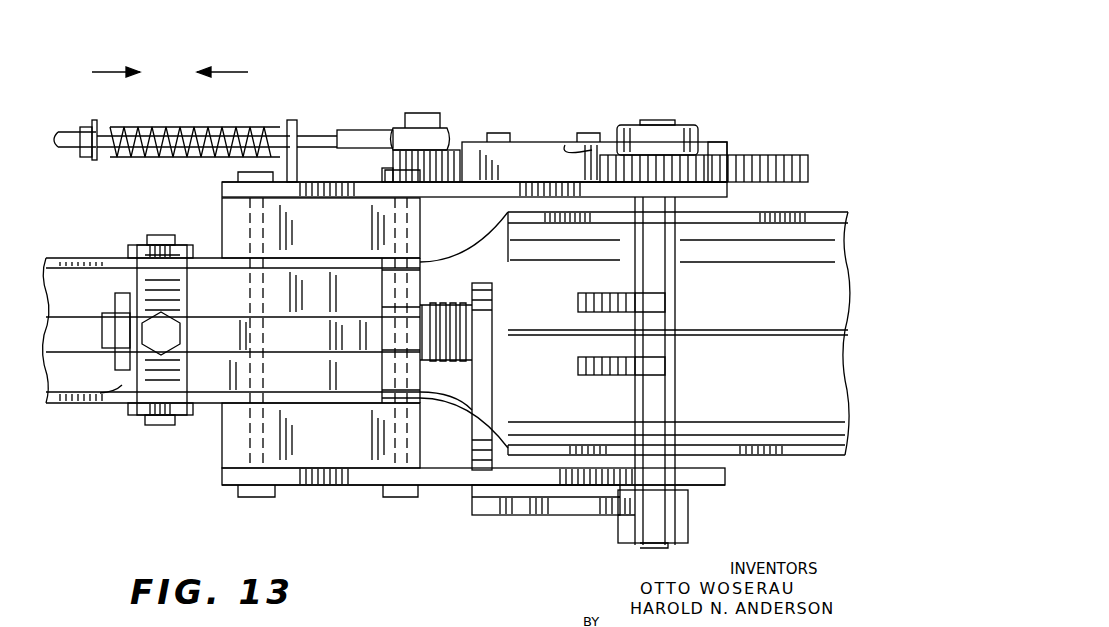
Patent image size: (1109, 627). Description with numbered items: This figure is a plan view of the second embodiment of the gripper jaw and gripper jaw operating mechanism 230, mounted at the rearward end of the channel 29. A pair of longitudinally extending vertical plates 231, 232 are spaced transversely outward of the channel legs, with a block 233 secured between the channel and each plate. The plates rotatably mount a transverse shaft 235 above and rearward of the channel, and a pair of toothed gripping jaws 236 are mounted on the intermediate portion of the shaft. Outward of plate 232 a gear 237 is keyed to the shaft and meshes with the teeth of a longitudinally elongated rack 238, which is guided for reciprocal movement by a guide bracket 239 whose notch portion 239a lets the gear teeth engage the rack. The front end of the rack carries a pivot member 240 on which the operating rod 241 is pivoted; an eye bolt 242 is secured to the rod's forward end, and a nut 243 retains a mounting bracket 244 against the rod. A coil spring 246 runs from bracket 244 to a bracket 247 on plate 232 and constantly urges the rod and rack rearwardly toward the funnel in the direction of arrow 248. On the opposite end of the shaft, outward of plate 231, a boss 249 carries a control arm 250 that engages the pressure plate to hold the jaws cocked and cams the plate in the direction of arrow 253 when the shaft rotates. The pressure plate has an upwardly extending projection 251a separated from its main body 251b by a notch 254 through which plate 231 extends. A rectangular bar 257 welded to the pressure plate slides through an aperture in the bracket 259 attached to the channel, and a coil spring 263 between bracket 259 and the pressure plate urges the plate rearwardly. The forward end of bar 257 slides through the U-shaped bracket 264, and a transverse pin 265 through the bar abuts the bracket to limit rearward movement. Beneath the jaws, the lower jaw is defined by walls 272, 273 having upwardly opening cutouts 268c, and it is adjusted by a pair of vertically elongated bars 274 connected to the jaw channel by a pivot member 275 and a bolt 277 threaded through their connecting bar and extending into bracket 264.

The channel 29 is at (82, 262).
The gripper jaw and gripper jaw operating mechanism 230 is at (216, 489).
The vertical plate 231 is at (725, 480).
The vertical plate 232 is at (508, 190).
The block 233 is at (358, 232).
The transverse shaft 235 is at (680, 282).
The toothed gripping jaws 236 is at (580, 366).
The gear 237 is at (690, 128).
The rack 238 is at (798, 156).
The guide bracket 239 is at (527, 145).
The notch portion 239a is at (575, 148).
The pivot member 240 is at (425, 122).
The operating rod 241 is at (360, 132).
The eye bolt 242 is at (63, 130).
The nut 243 is at (87, 125).
The mounting bracket 244 is at (94, 160).
The coil spring 246 is at (175, 128).
The bracket 247 is at (295, 122).
The arrow 248 is at (103, 70).
The boss 249 is at (688, 518).
The control arm 250 is at (600, 510).
The projection 251a is at (470, 512).
The main body 251b is at (490, 395).
The arrow 253 is at (242, 70).
The notch 254 is at (470, 453).
The rectangular bar 257 is at (282, 340).
The bracket 259 is at (385, 296).
The coil spring 263 is at (445, 305).
The U-shaped bracket 264 is at (122, 390).
The transverse pin 265 is at (118, 301).
The cutouts 268c is at (470, 236).
The wall 272 is at (820, 387).
The wall 273 is at (812, 297).
The vertically elongated bars 274 is at (187, 246).
The pivot member 275 is at (160, 426).
The bolt 277 is at (170, 318).